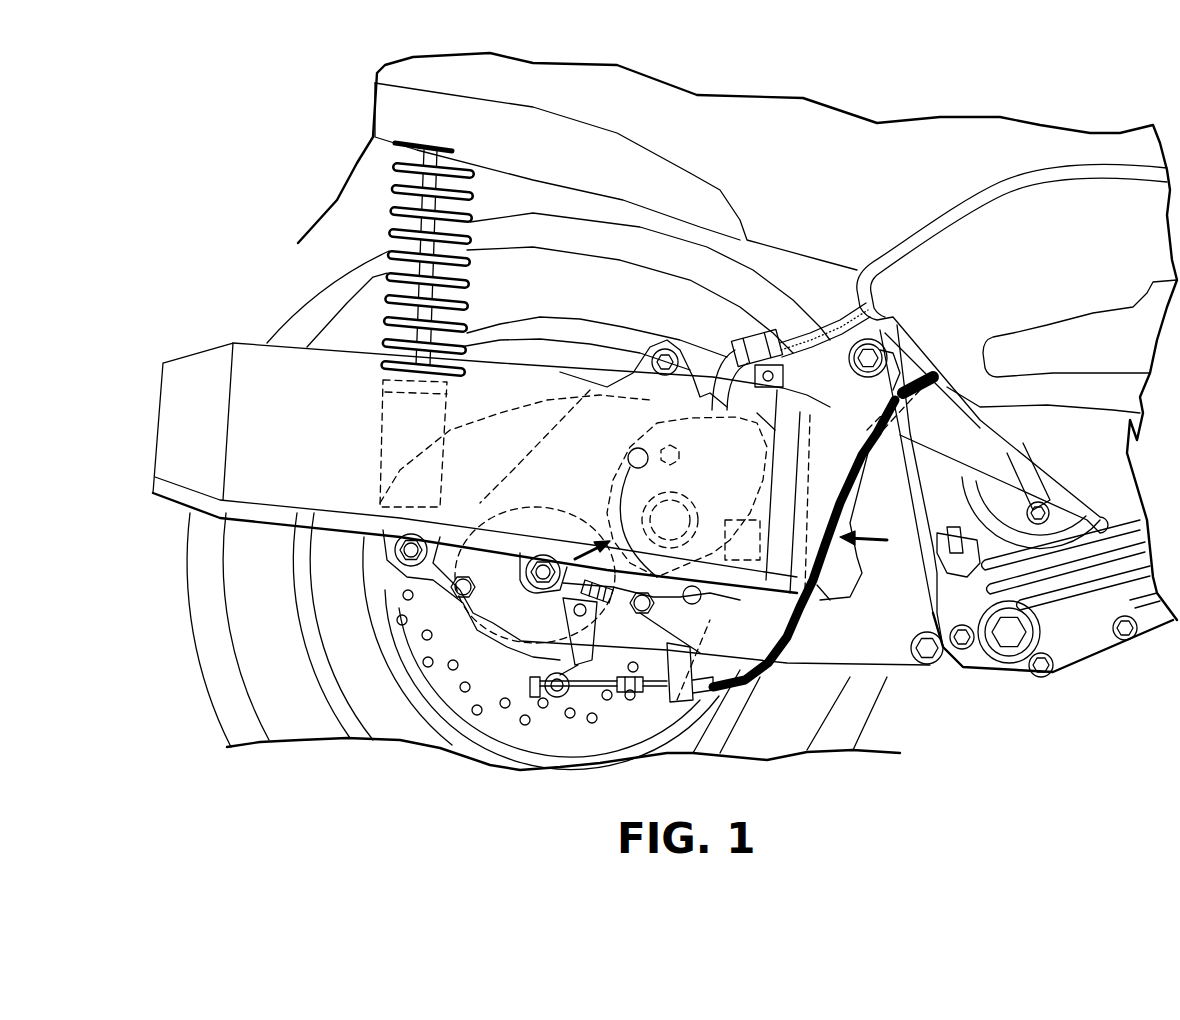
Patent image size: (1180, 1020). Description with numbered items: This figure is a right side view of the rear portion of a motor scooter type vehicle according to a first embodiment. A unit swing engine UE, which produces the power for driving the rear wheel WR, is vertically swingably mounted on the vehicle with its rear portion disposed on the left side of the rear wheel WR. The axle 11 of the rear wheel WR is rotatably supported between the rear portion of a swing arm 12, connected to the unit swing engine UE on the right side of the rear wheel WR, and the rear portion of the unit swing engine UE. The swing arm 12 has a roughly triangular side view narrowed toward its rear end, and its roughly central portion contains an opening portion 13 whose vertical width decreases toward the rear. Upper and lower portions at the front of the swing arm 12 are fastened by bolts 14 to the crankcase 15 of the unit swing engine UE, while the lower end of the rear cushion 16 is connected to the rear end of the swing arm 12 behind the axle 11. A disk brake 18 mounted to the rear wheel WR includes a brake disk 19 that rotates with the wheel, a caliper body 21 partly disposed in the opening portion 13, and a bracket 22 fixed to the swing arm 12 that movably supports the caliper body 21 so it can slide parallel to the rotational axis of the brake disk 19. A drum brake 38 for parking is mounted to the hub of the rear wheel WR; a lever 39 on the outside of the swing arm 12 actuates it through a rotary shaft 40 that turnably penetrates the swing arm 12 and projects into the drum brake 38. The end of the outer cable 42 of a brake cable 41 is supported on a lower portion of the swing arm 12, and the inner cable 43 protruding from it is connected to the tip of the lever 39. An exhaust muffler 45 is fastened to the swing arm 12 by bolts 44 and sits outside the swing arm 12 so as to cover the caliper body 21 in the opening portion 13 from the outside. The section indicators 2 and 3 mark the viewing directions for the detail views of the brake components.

The axle 11 is at (535, 575).
The swing arm 12 is at (703, 360).
The opening portion 13 is at (853, 560).
The bolts 14 is at (873, 343).
The crankcase 15 is at (1100, 533).
The rear cushion 16 is at (413, 260).
The disk brake 18 is at (368, 628).
The brake disk 19 is at (393, 590).
The caliper body 21 is at (788, 462).
The bracket 22 is at (693, 602).
The drum brake 38 is at (517, 505).
The lever 39 is at (543, 670).
The rotary shaft 40 is at (567, 620).
The brake cable 41 is at (793, 638).
The outer cable 42 is at (830, 600).
The inner cable 43 is at (600, 690).
The bolts 44 is at (667, 347).
The exhaust muffler 45 is at (250, 362).
The rear wheel WR is at (327, 300).
The unit swing engine UE is at (1073, 667).
The section view arrow FIG. 2 is at (586, 539).
The section view arrow FIG. 3 is at (868, 523).